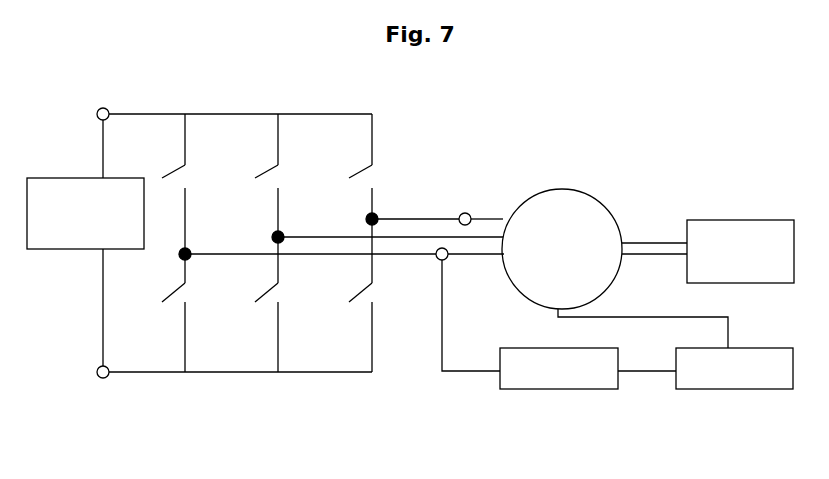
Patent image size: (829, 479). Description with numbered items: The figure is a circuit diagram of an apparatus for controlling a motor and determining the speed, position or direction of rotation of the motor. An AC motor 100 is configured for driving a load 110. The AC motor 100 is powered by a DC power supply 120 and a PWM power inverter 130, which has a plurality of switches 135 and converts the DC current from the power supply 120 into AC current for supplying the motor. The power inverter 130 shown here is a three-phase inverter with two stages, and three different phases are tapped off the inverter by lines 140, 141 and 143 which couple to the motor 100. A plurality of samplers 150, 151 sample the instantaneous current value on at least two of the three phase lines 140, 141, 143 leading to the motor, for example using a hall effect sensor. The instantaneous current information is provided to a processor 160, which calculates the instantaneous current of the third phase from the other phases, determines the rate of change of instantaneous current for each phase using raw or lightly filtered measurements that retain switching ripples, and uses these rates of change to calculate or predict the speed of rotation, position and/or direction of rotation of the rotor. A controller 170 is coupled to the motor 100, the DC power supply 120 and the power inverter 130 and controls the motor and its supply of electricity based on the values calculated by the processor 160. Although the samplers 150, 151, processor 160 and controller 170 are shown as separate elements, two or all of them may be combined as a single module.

The AC motor 100 is at (565, 188).
The load 110 is at (733, 219).
The DC power supply 120 is at (62, 177).
The PWM power inverter 130 is at (237, 280).
The switches 135 is at (194, 179).
The phase line 140 is at (308, 258).
The phase line 141 is at (318, 233).
The phase line 143 is at (423, 214).
The sampler 150 is at (465, 211).
The sampler 151 is at (436, 262).
The processor 160 is at (553, 390).
The controller 170 is at (769, 390).